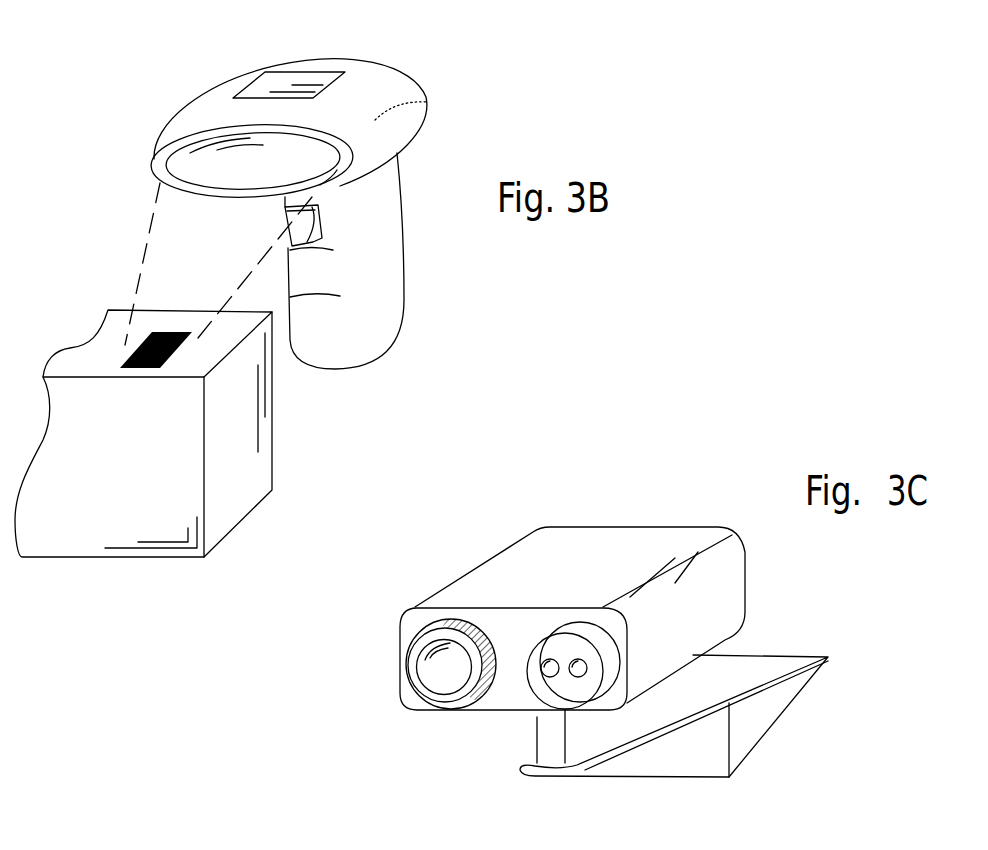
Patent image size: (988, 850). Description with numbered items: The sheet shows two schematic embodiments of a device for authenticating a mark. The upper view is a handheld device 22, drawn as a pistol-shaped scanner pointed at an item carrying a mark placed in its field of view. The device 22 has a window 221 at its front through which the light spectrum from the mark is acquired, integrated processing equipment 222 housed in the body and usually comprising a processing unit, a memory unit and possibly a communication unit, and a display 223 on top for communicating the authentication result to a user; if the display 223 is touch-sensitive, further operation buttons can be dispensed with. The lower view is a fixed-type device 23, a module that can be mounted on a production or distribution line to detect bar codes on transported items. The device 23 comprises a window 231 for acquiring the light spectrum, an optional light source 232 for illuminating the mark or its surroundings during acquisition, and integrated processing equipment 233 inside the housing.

In FIG. 3B, the device 22 is at (300, 194).
In FIG. 3B, the window 221 is at (210, 175).
In FIG. 3B, the integrated processing equipment 222 is at (427, 102).
In FIG. 3B, the display 223 is at (337, 62).
In FIG. 3C, the device 23 is at (552, 617).
In FIG. 3C, the window 231 is at (443, 703).
In FIG. 3C, the light source 232 is at (548, 688).
In FIG. 3C, the integrated processing equipment 233 is at (595, 568).